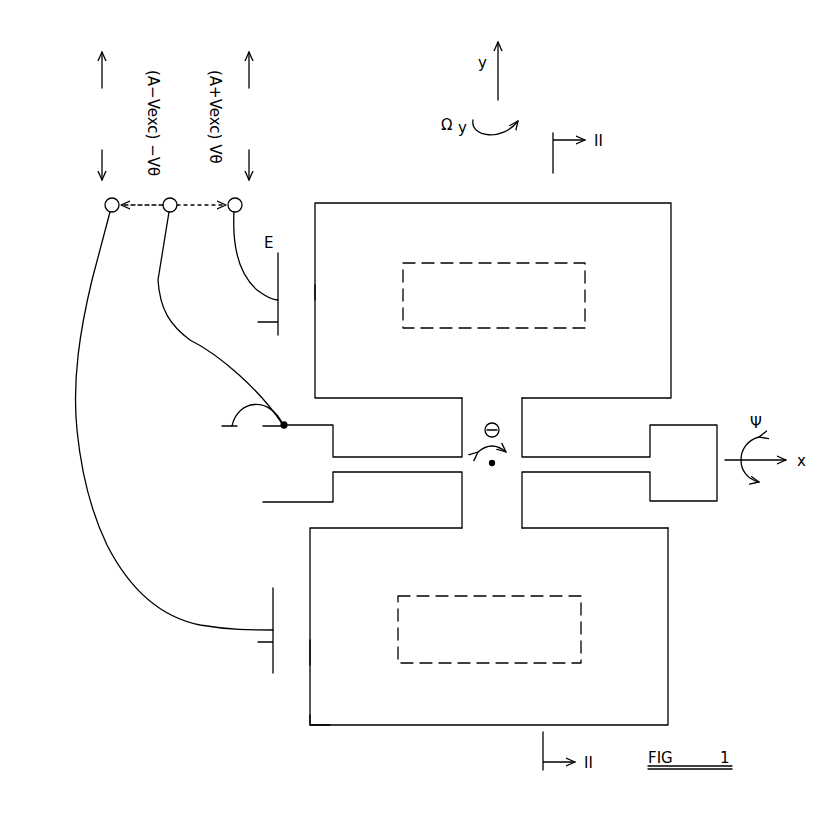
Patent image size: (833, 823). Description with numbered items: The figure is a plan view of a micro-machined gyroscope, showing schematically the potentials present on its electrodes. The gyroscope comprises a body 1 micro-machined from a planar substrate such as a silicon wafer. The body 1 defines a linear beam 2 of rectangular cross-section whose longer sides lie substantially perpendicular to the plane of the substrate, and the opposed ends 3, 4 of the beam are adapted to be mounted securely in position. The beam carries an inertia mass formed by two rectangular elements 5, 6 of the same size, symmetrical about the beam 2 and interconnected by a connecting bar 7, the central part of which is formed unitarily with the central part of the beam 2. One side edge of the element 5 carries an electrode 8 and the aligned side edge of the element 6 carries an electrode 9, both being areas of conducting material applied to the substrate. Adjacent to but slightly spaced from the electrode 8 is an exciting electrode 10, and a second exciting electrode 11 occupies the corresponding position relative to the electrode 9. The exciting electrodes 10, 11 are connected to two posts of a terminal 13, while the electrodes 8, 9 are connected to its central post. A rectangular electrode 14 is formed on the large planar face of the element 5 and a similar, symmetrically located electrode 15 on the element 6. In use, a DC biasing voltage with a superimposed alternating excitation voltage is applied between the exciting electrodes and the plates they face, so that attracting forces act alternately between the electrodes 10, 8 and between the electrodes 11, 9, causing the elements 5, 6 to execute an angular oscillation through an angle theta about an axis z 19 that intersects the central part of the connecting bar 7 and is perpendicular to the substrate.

The body 1 is at (304, 733).
The linear beam 2 is at (395, 472).
The end of the beam 3 is at (280, 457).
The end of the beam 4 is at (688, 452).
The rectangular element 5 is at (652, 285).
The rectangular element 6 is at (648, 600).
The connecting bar 7 is at (507, 508).
The electrode 8 is at (315, 285).
The electrode 9 is at (310, 653).
The exciting electrode 10 is at (260, 322).
The second exciting electrode 11 is at (258, 642).
The terminal 13 is at (93, 226).
The electrode 14 is at (585, 270).
The electrode 15 is at (553, 642).
The axis z 19 is at (494, 463).